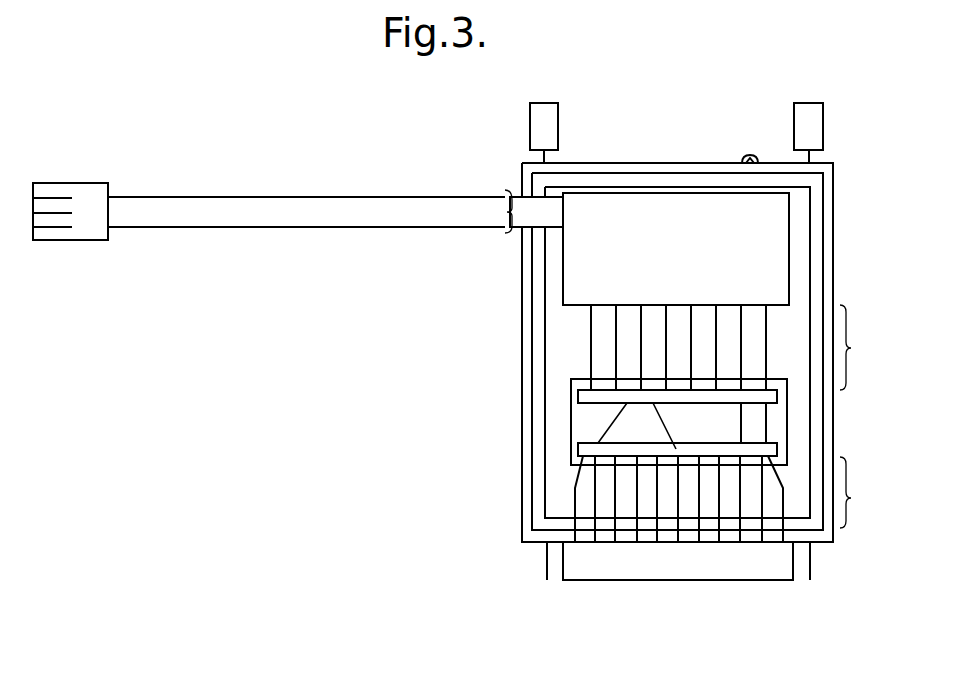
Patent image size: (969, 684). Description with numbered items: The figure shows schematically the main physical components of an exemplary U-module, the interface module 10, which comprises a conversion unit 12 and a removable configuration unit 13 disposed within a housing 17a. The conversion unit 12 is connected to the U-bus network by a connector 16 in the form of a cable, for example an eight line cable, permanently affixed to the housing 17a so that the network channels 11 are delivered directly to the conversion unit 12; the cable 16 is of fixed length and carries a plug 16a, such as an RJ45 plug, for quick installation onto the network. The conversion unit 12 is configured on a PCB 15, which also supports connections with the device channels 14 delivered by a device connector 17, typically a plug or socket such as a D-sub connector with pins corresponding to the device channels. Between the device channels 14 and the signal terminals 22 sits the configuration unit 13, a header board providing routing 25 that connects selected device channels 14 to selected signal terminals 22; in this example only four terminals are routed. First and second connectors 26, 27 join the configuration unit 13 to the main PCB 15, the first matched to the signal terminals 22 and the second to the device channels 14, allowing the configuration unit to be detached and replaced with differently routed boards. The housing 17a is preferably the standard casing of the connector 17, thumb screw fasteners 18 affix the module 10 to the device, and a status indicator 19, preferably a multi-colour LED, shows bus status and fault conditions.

The interface module 10 is at (290, 420).
The network channels 11 is at (507, 212).
The conversion unit 12 is at (695, 256).
The configuration unit 13 is at (787, 428).
The device channels 14 is at (730, 499).
The PCB 15 is at (562, 343).
The connector 16 is at (238, 228).
The plug 16a is at (70, 240).
The device connector 17 is at (722, 580).
The housing 17a is at (523, 542).
The thumb screw fasteners 18 is at (559, 123).
The status indicator 19 is at (748, 156).
The signal terminals 22 is at (738, 374).
The routing 25 is at (575, 422).
The first connector 26 is at (582, 394).
The second connector 27 is at (583, 448).